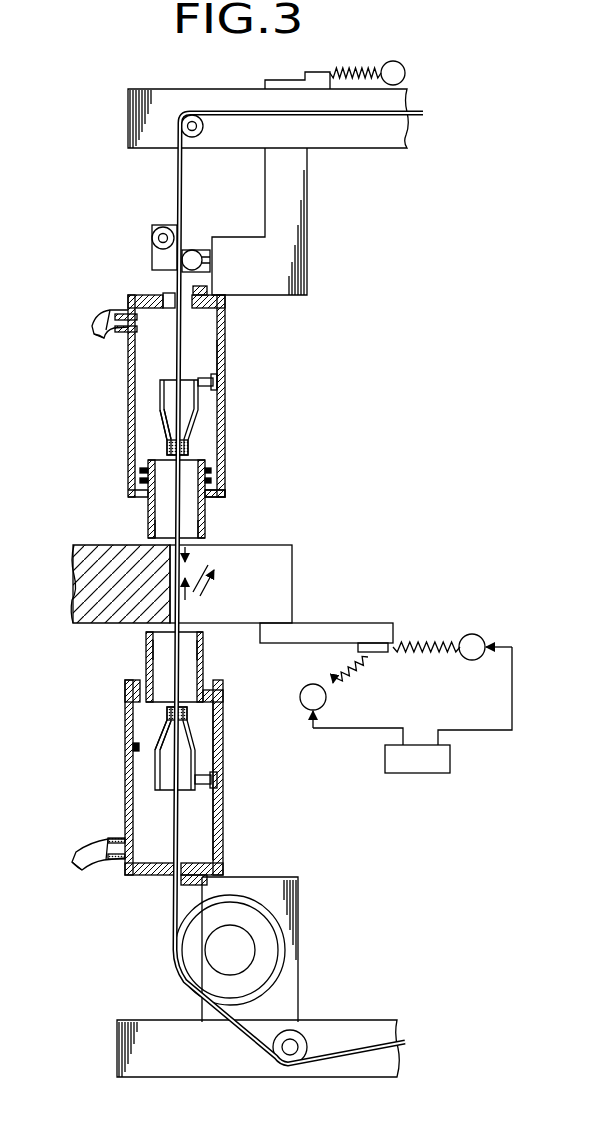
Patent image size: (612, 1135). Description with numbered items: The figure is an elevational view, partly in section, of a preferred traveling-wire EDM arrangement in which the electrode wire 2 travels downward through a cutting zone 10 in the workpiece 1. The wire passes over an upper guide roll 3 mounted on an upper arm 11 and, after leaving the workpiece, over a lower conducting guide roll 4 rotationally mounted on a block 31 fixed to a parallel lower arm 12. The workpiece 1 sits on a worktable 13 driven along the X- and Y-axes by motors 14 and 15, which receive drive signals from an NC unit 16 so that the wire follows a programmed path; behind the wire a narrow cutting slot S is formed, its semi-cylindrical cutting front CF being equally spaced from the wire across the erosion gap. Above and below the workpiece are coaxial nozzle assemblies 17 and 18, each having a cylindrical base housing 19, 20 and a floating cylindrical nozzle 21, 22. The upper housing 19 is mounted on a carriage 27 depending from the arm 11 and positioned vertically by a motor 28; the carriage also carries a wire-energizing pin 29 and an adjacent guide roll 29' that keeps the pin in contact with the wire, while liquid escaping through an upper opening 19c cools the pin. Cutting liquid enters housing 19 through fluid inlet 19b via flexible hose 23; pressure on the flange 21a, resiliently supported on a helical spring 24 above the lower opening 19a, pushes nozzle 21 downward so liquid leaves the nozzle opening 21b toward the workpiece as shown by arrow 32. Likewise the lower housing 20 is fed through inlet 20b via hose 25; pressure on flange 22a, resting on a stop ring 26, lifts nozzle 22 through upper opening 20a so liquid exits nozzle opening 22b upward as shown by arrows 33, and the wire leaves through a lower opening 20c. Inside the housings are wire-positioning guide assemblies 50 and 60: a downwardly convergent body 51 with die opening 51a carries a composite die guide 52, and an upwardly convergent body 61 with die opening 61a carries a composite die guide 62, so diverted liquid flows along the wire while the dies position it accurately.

The workpiece 1 is at (74, 577).
The electrode wire 2 is at (177, 169).
The guide roll 3 is at (198, 135).
The guide roll 4 is at (270, 958).
The cutting zone 10 is at (170, 574).
The upper arm 11 is at (128, 121).
The lower arm 12 is at (117, 1050).
The worktable 13 is at (372, 622).
The motor 14 is at (472, 660).
The motor 15 is at (326, 697).
The NC unit 16 is at (450, 760).
The nozzle assembly 17 is at (227, 366).
The nozzle assembly 18 is at (226, 748).
The cylindrical base housing 19 is at (128, 371).
The lower opening 19a is at (210, 497).
The fluid inlet 19b is at (140, 325).
The upper opening 19c is at (170, 292).
The cylindrical base housing 20 is at (125, 746).
The upper opening 20a is at (216, 684).
The fluid inlet 20b is at (140, 868).
The lower opening 20c is at (180, 885).
The cylindrical nozzle 21 is at (148, 500).
The circular flange 21a is at (211, 471).
The nozzle opening 21b is at (170, 522).
The cylindrical nozzle 22 is at (146, 660).
The circular flange 22a is at (128, 700).
The nozzle opening 22b is at (204, 652).
The flexible hose 23 is at (96, 318).
The helical spring 24 is at (140, 474).
The flexible hose 25 is at (92, 842).
The ring 26 is at (138, 743).
The carriage 27 is at (307, 198).
The motor 28 is at (405, 73).
The wire-energizing pin 29 is at (217, 234).
The guide roll 29' is at (137, 234).
The block 31 is at (298, 902).
The arrow 32 is at (194, 552).
The arrows 33 is at (190, 598).
The wire-positioning guide assembly 50 is at (203, 408).
The downwardly convergent body 51 is at (183, 382).
The die opening 51a is at (160, 405).
The composite die guide structure 52 is at (188, 441).
The wire-positioning guide assembly 60 is at (150, 760).
The upwardly convergent tubular body 61 is at (160, 790).
The die opening 61a is at (200, 778).
The composite die guide 62 is at (187, 718).
The cutting slot S is at (283, 547).
The cutting front CF is at (170, 604).